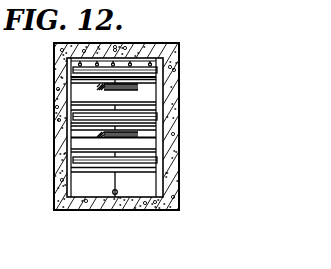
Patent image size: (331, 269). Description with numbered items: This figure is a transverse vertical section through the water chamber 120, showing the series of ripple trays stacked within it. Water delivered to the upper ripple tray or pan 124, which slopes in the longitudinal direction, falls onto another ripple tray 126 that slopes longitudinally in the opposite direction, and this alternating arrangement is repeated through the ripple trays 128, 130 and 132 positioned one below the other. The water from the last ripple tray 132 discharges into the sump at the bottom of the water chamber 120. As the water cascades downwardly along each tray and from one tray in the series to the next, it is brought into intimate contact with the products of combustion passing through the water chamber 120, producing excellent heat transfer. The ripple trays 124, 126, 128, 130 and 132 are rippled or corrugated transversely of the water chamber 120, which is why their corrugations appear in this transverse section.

The water chamber 120 is at (92, 181).
The upper ripple tray 124 is at (150, 68).
The ripple tray 126 is at (127, 94).
The ripple tray 128 is at (150, 116).
The ripple tray 130 is at (123, 141).
The last ripple tray 132 is at (138, 166).